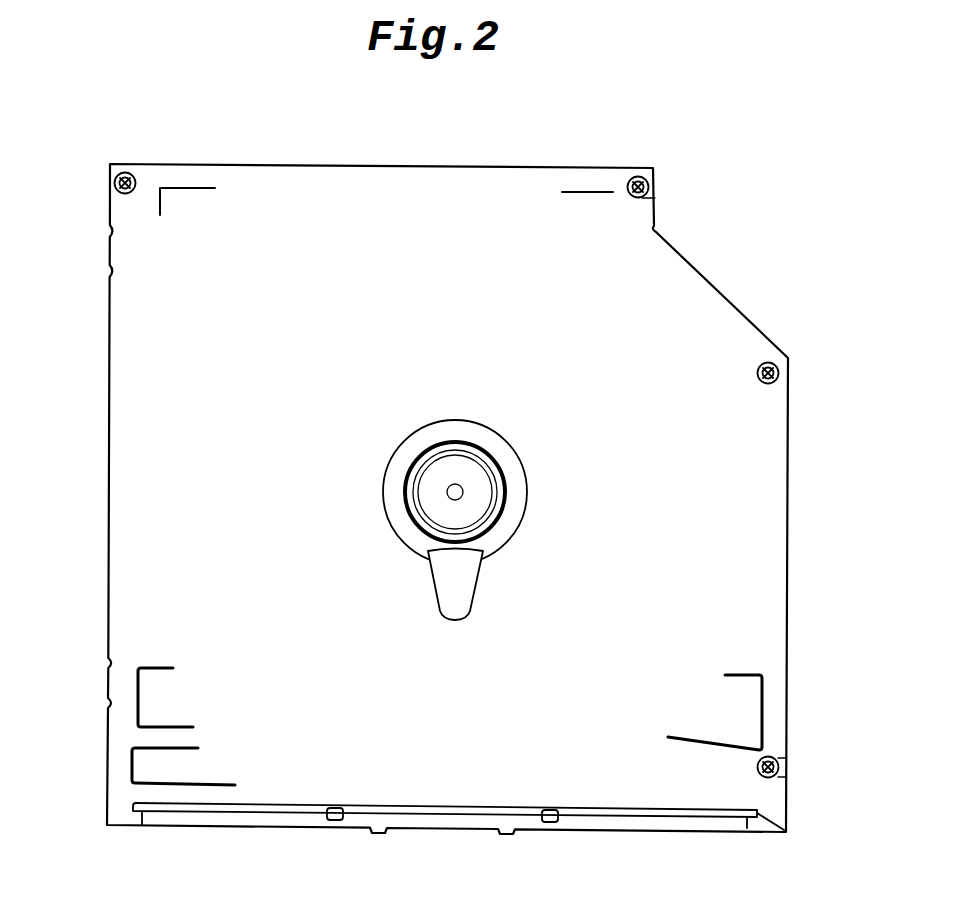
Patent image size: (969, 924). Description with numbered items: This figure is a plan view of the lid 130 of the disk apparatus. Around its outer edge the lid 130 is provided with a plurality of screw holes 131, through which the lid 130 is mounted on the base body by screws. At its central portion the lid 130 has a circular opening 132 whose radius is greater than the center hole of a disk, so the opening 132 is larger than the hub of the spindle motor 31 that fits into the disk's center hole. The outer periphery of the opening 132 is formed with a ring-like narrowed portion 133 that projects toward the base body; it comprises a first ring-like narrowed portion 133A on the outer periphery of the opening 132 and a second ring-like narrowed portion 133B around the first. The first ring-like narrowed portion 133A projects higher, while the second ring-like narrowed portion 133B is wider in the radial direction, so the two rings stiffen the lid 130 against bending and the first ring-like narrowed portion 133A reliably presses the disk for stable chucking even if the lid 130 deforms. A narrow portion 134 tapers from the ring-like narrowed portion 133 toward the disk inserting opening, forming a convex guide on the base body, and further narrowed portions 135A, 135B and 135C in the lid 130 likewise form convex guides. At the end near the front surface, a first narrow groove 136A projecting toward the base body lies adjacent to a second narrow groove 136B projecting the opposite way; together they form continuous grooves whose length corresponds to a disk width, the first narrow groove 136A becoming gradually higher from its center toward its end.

The lid 130 is at (758, 568).
The screw holes 131 is at (130, 170).
The opening 132 is at (453, 467).
The ring-like narrowed portion 133 is at (550, 481).
The first ring-like narrowed portion 133A is at (493, 478).
The second ring-like narrowed portion 133B is at (513, 510).
The spindle motor 31 is at (450, 493).
The narrow portion 134 is at (470, 586).
The narrowed portion 135A is at (143, 767).
The narrowed portion 135B is at (745, 693).
The narrowed portion 135C is at (150, 688).
The first narrow groove 136A is at (757, 813).
The second narrow groove 136B is at (668, 826).